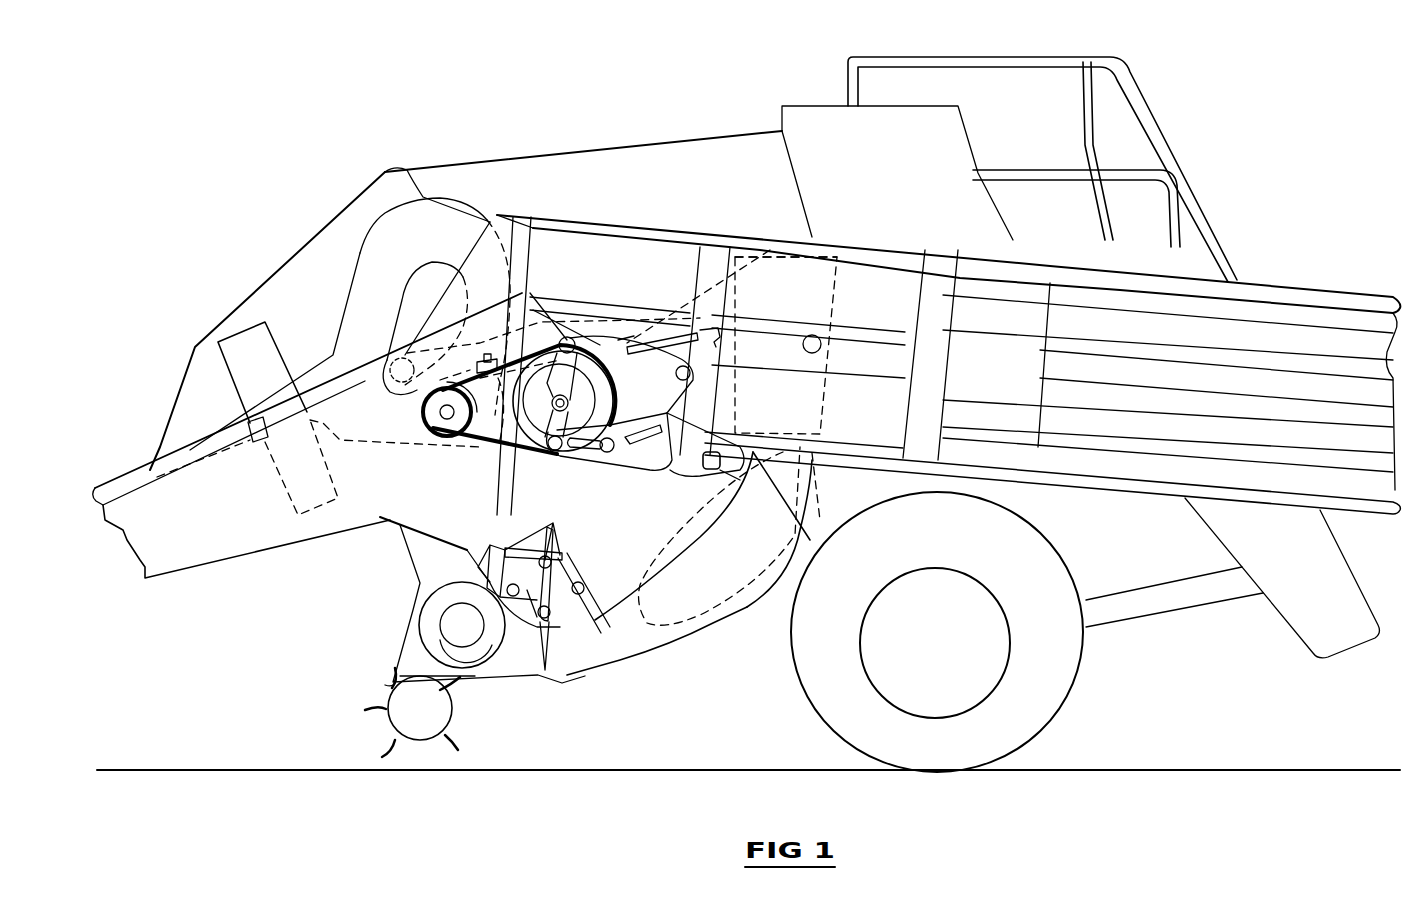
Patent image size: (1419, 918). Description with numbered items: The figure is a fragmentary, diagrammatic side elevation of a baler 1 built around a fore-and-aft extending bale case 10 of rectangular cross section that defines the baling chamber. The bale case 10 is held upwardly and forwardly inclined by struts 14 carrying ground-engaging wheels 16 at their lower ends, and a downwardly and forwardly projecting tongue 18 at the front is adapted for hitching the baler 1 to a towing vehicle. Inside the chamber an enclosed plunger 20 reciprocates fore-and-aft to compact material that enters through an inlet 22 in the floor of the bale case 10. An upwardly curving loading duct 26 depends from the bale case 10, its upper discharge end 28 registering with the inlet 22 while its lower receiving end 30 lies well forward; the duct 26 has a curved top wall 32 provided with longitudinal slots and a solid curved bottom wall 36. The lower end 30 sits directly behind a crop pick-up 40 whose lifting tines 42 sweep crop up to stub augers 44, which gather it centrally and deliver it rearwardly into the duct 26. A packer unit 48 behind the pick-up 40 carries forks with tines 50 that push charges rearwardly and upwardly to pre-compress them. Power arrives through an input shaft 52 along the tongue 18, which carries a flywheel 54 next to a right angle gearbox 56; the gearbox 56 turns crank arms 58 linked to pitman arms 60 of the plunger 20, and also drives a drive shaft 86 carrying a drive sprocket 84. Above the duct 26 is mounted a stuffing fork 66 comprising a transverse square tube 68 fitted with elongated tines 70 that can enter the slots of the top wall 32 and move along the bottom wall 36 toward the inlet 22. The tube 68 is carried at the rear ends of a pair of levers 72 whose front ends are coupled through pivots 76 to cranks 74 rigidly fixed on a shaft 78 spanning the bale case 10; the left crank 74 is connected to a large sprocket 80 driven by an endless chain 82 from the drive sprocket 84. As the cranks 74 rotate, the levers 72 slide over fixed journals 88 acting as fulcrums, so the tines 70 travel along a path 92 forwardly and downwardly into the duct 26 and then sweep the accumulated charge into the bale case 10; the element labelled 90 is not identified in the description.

The baler 1 is at (283, 246).
The bale case 10 is at (728, 223).
The struts 14 is at (838, 490).
The ground-engaging wheels 16 is at (803, 683).
The tongue 18 is at (193, 562).
The plunger 20 is at (840, 292).
The inlet 22 is at (790, 432).
The loading duct 26 is at (634, 652).
The upper discharge end 28 is at (815, 490).
The lower receiving end 30 is at (482, 600).
The curved top wall 32 is at (617, 603).
The curved bottom wall 36 is at (686, 640).
The crop pick-up 40 is at (378, 689).
The lifting tines 42 is at (413, 752).
The stub augers 44 is at (425, 620).
The packer unit 48 is at (573, 553).
The tines 50 is at (560, 640).
The power input shaft 52 is at (112, 462).
The flywheel 54 is at (243, 337).
The right angle gearbox 56 is at (352, 280).
The crank arms 58 is at (408, 318).
The pitman arms 60 is at (650, 332).
The stuffing fork 66 is at (700, 462).
The transverse square tube 68 is at (712, 470).
The tines 70 is at (745, 480).
The levers 72 is at (617, 462).
The cranks 74 is at (555, 425).
The pivots 76 is at (562, 455).
The shaft 78 is at (606, 390).
The large sprocket 80 is at (503, 467).
The endless chain 82 is at (468, 452).
The drive sprocket 84 is at (442, 432).
The drive shaft 86 is at (440, 412).
The journals 88 is at (604, 452).
The stop 90 is at (648, 442).
The path 92 is at (735, 612).